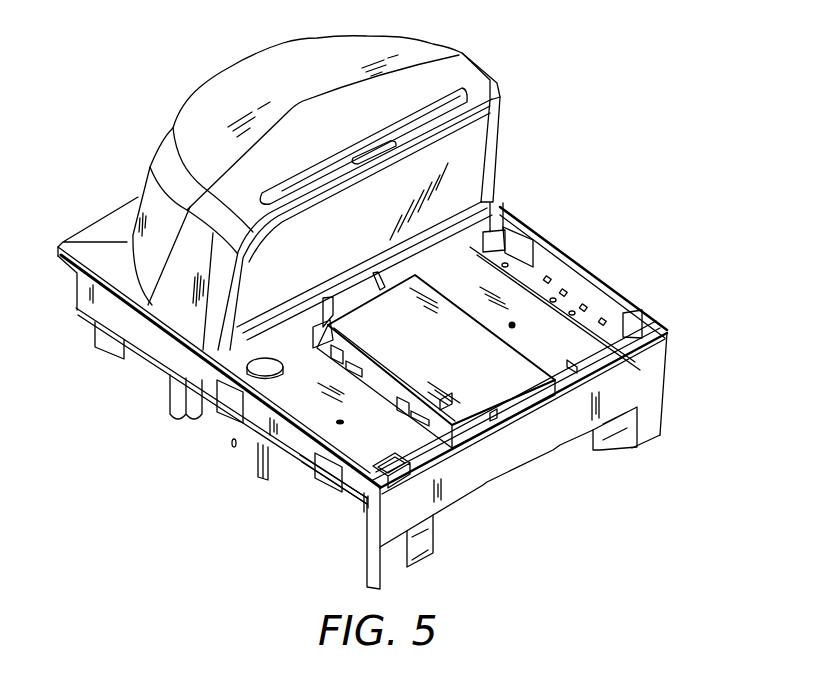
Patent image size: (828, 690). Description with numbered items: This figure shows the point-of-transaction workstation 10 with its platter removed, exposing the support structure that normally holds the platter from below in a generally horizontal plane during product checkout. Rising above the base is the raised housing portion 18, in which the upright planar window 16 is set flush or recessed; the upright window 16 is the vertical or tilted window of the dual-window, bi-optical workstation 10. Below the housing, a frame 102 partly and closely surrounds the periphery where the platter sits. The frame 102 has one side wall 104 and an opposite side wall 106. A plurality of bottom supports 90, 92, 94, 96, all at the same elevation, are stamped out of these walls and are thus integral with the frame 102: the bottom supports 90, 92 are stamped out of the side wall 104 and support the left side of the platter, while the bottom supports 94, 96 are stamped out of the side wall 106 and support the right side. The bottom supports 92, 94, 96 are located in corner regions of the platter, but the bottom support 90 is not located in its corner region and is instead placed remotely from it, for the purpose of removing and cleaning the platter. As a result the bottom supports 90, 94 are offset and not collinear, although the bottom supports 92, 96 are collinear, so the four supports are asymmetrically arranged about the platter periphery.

The point-of-transaction workstation 10 is at (213, 62).
The raised housing portion 18 is at (163, 160).
The upright planar window 16 is at (283, 268).
The bottom support 92 is at (245, 360).
The bottom support 96 is at (502, 220).
The side wall 106 is at (540, 230).
The bottom support 94 is at (650, 326).
The bottom support 90 is at (367, 462).
The frame 102 is at (472, 483).
The side wall 104 is at (360, 497).